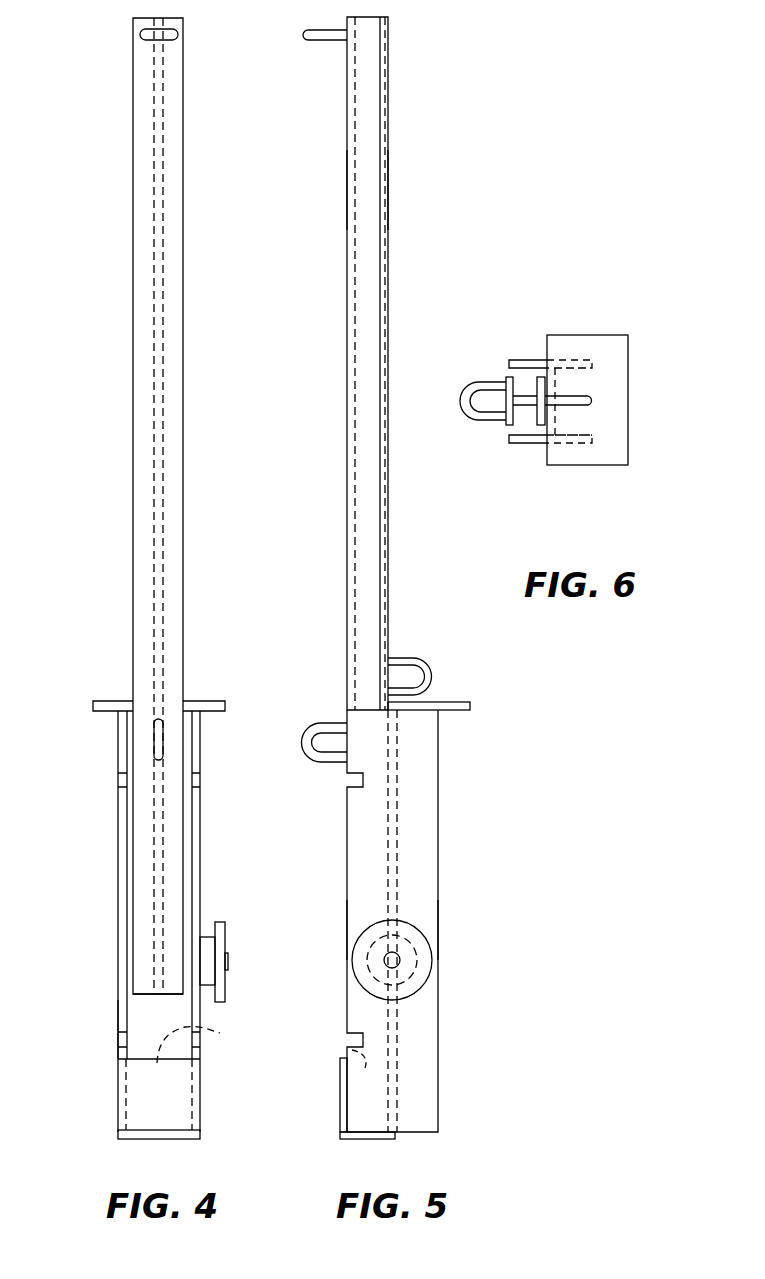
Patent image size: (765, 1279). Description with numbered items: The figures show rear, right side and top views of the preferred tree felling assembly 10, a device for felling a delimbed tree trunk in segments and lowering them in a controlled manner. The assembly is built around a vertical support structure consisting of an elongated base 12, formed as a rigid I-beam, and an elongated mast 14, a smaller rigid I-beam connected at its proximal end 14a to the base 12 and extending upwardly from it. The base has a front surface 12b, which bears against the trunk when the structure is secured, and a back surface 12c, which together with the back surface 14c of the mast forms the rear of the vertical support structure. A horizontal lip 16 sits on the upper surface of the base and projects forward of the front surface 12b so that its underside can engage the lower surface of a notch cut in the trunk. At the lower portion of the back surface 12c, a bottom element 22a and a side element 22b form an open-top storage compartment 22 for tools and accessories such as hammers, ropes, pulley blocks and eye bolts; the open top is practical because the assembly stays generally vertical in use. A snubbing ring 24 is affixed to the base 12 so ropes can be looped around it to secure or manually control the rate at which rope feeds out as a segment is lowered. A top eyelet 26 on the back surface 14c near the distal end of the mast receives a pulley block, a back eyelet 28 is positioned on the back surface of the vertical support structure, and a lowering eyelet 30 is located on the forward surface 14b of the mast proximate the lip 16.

In FIG. 4, the tree felling assembly 10 is at (88, 470).
In FIG. 5, the tree felling assembly 10 is at (318, 470).
In FIG. 6, the tree felling assembly 10 is at (590, 262).
In FIG. 4, the base portion 12 is at (117, 865).
In FIG. 5, the base portion 12 is at (440, 868).
In FIG. 6, the base portion 12 is at (527, 444).
In FIG. 5, the front surface of the base 12b is at (438, 920).
In FIG. 4, the back surface of the base 12c is at (120, 1017).
In FIG. 5, the back surface of the base 12c is at (347, 929).
In FIG. 4, the mast portion 14 is at (133, 357).
In FIG. 5, the mast portion 14 is at (346, 357).
In FIG. 6, the mast portion 14 is at (505, 427).
In FIG. 4, the proximal end of the mast 14a is at (145, 992).
In FIG. 5, the forward surface of the mast 14b is at (388, 190).
In FIG. 5, the back surface of the mast 14c is at (347, 190).
In FIG. 4, the horizontal lip 16 is at (93, 704).
In FIG. 5, the horizontal lip 16 is at (470, 706).
In FIG. 6, the horizontal lip 16 is at (612, 352).
In FIG. 4, the storage compartment 22 is at (204, 1042).
In FIG. 5, the storage compartment 22 is at (347, 1050).
In FIG. 4, the bottom element 22a is at (133, 1138).
In FIG. 5, the bottom element 22a is at (362, 1138).
In FIG. 4, the side element 22b is at (150, 1083).
In FIG. 5, the side element 22b is at (340, 1092).
In FIG. 4, the snubbing ring 24 is at (210, 943).
In FIG. 5, the snubbing ring 24 is at (425, 960).
In FIG. 4, the top eyelet 26 is at (140, 34).
In FIG. 5, the top eyelet 26 is at (304, 35).
In FIG. 6, the top eyelet 26 is at (478, 381).
In FIG. 4, the back eyelet 28 is at (160, 742).
In FIG. 5, the back eyelet 28 is at (310, 722).
In FIG. 6, the back eyelet 28 is at (487, 397).
In FIG. 5, the lowering eyelet 30 is at (432, 672).
In FIG. 6, the lowering eyelet 30 is at (572, 405).